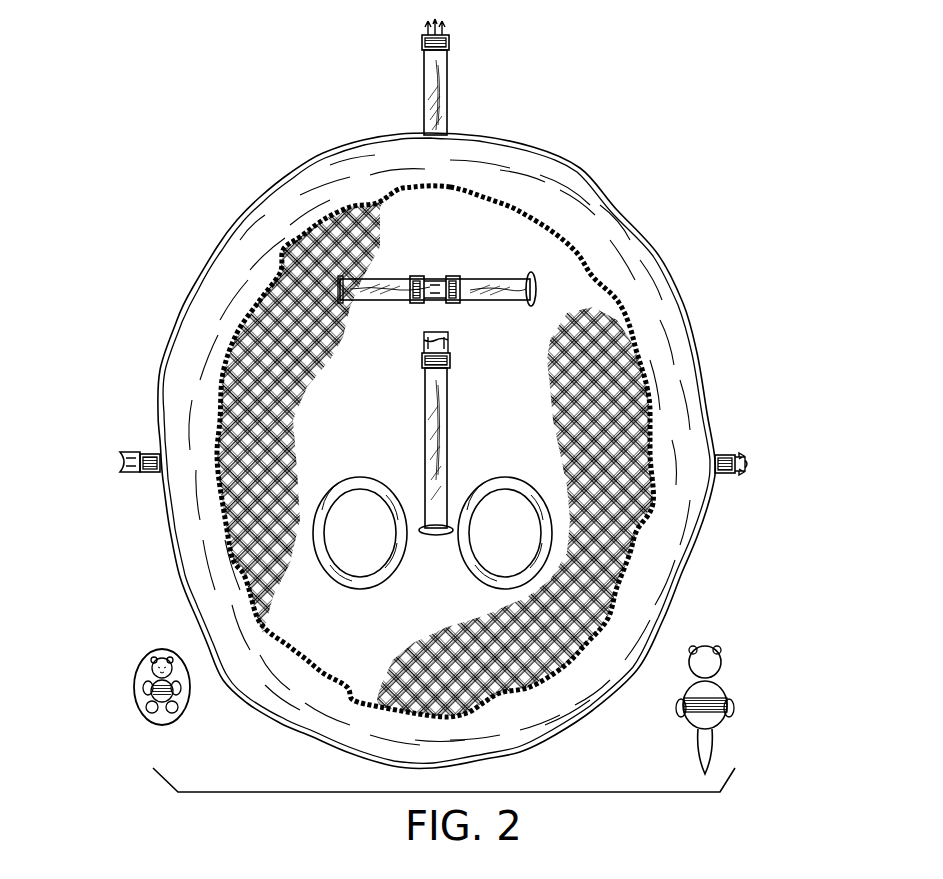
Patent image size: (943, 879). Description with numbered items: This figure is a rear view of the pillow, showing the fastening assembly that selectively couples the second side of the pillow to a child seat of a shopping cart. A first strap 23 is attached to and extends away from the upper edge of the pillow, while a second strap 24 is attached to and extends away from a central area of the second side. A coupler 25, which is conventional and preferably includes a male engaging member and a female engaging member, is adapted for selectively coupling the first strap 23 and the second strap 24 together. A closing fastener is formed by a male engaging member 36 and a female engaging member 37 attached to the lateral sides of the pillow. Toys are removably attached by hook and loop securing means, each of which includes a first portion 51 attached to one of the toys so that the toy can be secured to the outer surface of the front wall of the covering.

The first strap 23 is at (424, 95).
The second strap 24 is at (448, 405).
The coupler 25 is at (449, 42).
The male engaging member 36 is at (752, 465).
The female engaging member 37 is at (120, 462).
The first portion 51 is at (146, 700).